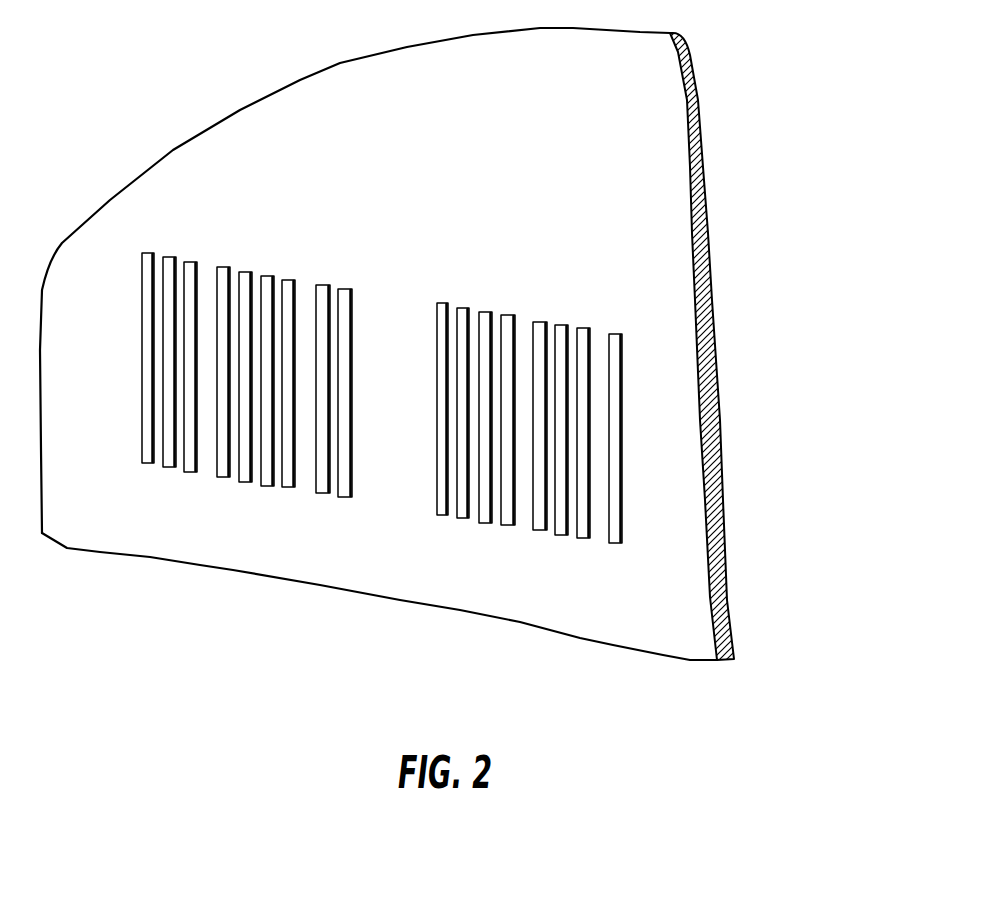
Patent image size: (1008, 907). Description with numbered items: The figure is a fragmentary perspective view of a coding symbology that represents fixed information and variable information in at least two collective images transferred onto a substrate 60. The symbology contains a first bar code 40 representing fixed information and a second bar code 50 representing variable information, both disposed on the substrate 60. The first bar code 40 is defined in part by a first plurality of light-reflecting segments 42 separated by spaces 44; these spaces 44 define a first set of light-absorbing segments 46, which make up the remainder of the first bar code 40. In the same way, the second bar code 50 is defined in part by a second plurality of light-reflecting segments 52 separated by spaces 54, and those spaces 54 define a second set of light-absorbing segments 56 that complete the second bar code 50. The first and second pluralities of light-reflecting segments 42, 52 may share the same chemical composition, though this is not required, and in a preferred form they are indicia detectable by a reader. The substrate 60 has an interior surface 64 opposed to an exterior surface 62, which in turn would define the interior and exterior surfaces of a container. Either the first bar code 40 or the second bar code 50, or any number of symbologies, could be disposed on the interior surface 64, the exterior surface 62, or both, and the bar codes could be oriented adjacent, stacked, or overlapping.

The first bar code 40 is at (216, 340).
The first plurality of light-reflecting segments 42 is at (191, 471).
The spaces 44 is at (235, 478).
The first set of light-absorbing segments 46 is at (160, 257).
The second bar code 50 is at (535, 397).
The second plurality of light-reflecting segments 52 is at (562, 535).
The spaces 54 is at (525, 523).
The second set of light-absorbing segments 56 is at (572, 330).
The substrate 60 is at (723, 88).
The exterior surface 62 is at (640, 635).
The interior surface 64 is at (746, 609).